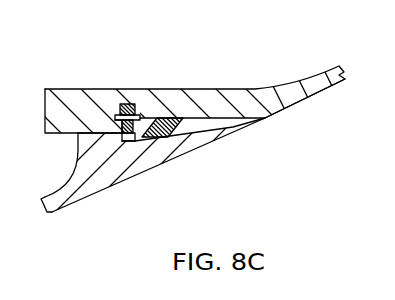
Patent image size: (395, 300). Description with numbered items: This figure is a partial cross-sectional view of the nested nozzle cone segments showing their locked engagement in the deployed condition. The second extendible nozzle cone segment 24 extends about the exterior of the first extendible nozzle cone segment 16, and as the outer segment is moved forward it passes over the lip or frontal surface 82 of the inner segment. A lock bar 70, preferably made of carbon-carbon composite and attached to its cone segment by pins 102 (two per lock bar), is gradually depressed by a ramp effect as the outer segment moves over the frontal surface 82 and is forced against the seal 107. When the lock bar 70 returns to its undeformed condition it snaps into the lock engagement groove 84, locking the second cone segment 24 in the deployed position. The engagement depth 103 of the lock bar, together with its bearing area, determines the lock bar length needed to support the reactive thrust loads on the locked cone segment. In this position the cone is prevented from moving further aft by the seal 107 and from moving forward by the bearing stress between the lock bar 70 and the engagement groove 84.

The second extendible nozzle cone segment 24 is at (284, 81).
The first extendible nozzle cone segment 16 is at (91, 199).
The lip 82 is at (78, 153).
The pins 102 is at (120, 103).
The seal 107 is at (174, 117).
The engagement depth 103 is at (134, 141).
The lock bar 70 is at (127, 141).
The lock engagement groove 84 is at (125, 141).